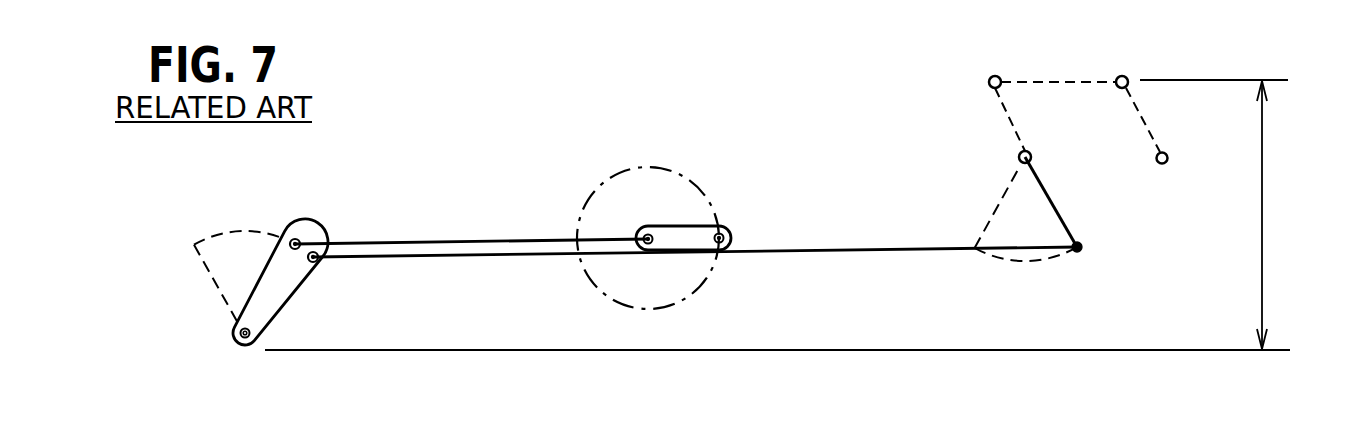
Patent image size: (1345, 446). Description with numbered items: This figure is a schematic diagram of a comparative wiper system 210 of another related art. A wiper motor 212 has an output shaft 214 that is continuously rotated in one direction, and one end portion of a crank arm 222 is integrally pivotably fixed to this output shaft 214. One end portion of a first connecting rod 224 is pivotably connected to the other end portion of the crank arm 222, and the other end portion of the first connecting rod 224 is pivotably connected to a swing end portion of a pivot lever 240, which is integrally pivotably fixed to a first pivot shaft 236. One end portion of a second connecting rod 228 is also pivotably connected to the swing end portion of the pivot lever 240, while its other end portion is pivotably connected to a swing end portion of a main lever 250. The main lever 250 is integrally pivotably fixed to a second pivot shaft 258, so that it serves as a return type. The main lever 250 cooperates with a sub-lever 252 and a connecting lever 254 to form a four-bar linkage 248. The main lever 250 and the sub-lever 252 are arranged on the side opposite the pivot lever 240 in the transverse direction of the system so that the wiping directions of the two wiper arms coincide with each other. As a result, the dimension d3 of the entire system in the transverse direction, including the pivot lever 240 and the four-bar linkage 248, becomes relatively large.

The comparative wiper system 210 is at (605, 156).
The wiper motor 212 is at (672, 166).
The output shaft 214 is at (647, 243).
The crank arm 222 is at (677, 223).
The first connecting rod 224 is at (430, 240).
The second connecting rod 228 is at (838, 252).
The first pivot shaft 236 is at (241, 345).
The pivot lever 240 is at (296, 292).
The four-bar linkage 248 is at (1034, 66).
The main lever 250 is at (1050, 200).
The sub-lever 252 is at (1138, 108).
The connecting lever 254 is at (1060, 78).
The second pivot shaft 258 is at (1032, 155).
The dimension of the entire system in the transverse direction d3 is at (1262, 205).